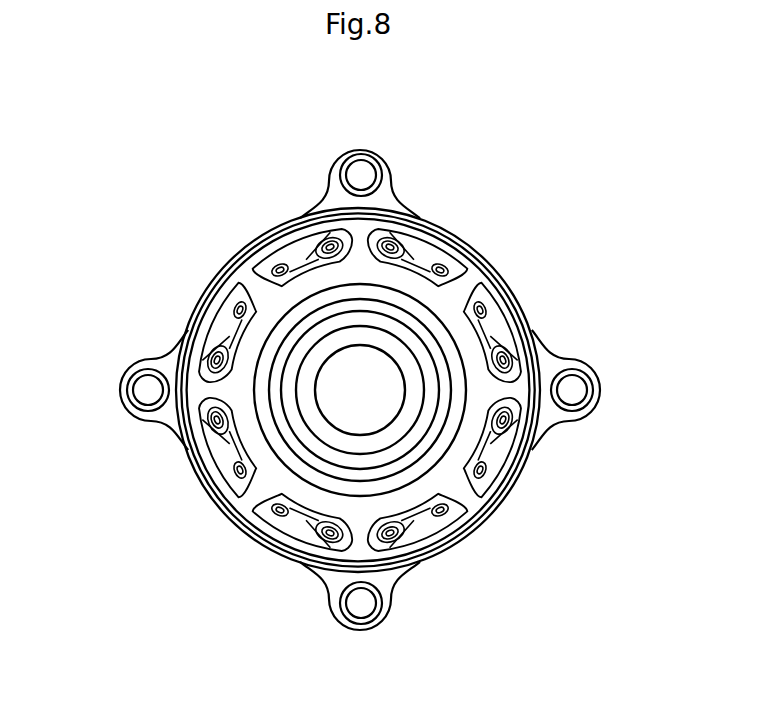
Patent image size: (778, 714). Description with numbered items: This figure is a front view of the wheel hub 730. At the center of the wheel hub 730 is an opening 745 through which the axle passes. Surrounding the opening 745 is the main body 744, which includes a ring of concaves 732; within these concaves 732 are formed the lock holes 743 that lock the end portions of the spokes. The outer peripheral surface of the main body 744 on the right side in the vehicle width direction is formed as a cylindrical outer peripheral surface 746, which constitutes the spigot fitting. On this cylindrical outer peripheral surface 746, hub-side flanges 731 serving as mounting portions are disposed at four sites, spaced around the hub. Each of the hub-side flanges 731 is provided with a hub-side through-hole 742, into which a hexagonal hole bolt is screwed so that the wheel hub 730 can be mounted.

The wheel hub 730 is at (534, 238).
The hub-side flange 731 is at (334, 174).
The concave 732 is at (498, 331).
The hub-side through-hole 742 is at (360, 170).
The lock hole 743 is at (500, 413).
The main body 744 is at (413, 290).
The opening 745 is at (377, 403).
The cylindrical outer peripheral surface 746 is at (378, 202).